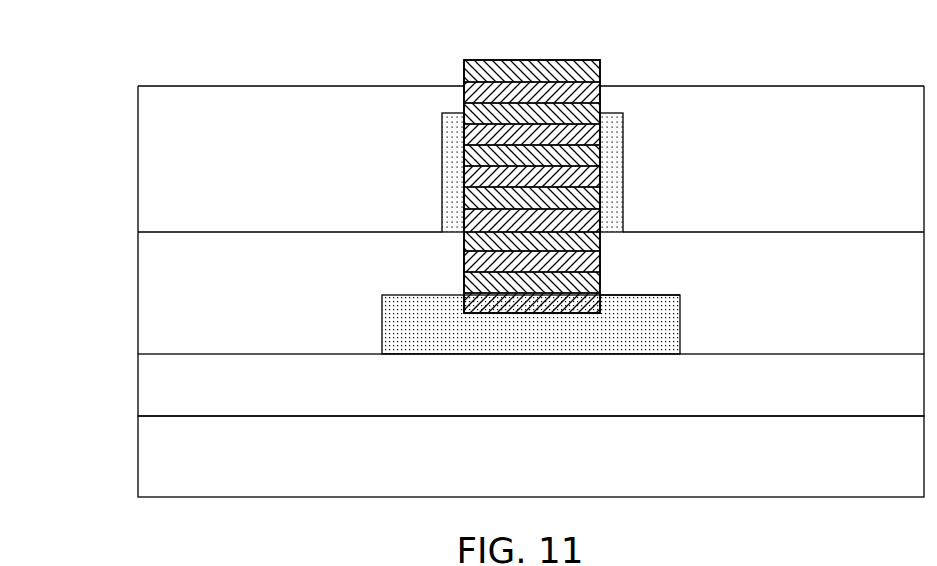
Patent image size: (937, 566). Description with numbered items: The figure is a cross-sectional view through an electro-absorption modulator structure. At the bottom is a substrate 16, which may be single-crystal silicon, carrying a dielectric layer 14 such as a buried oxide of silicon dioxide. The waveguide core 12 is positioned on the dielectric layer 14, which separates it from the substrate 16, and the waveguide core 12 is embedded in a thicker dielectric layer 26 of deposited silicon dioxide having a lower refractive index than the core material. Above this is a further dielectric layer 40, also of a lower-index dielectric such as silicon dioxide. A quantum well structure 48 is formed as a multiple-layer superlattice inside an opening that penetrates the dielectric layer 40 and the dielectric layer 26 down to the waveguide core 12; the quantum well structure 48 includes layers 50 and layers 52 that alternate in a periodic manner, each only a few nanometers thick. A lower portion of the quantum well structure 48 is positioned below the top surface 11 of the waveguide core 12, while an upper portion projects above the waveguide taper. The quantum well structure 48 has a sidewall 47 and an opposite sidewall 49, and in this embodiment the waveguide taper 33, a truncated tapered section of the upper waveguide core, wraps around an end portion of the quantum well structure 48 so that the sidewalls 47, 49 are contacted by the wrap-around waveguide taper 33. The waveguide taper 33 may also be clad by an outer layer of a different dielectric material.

The quantum well structure 48 is at (518, 177).
The layers 50 is at (578, 137).
The layers 52 is at (578, 200).
The waveguide taper 33 is at (452, 197).
The sidewall 47 is at (464, 262).
The sidewall 49 is at (600, 267).
The dielectric layer 40 is at (173, 162).
The dielectric layer 26 is at (193, 291).
The dielectric layer 14 is at (193, 384).
The substrate 16 is at (193, 458).
The waveguide core 12 is at (440, 332).
The top surface 11 is at (622, 293).